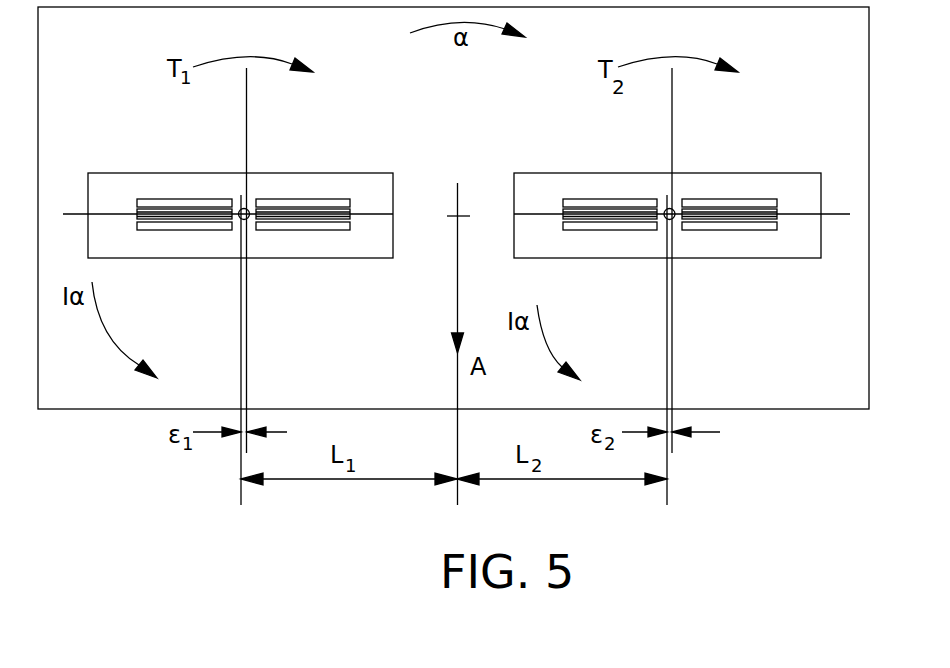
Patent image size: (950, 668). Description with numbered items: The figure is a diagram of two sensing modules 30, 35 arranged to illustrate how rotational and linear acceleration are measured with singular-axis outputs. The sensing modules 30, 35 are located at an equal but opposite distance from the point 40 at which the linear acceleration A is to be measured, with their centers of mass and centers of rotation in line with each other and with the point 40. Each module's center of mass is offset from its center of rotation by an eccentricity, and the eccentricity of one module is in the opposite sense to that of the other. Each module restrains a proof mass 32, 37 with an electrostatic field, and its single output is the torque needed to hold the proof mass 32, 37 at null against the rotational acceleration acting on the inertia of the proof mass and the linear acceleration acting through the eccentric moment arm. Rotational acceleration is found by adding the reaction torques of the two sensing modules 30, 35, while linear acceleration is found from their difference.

The sensing module 30 is at (290, 173).
The proof mass 32 is at (350, 216).
The sensing module 35 is at (740, 173).
The proof mass 37 is at (777, 218).
The point 40 is at (458, 212).